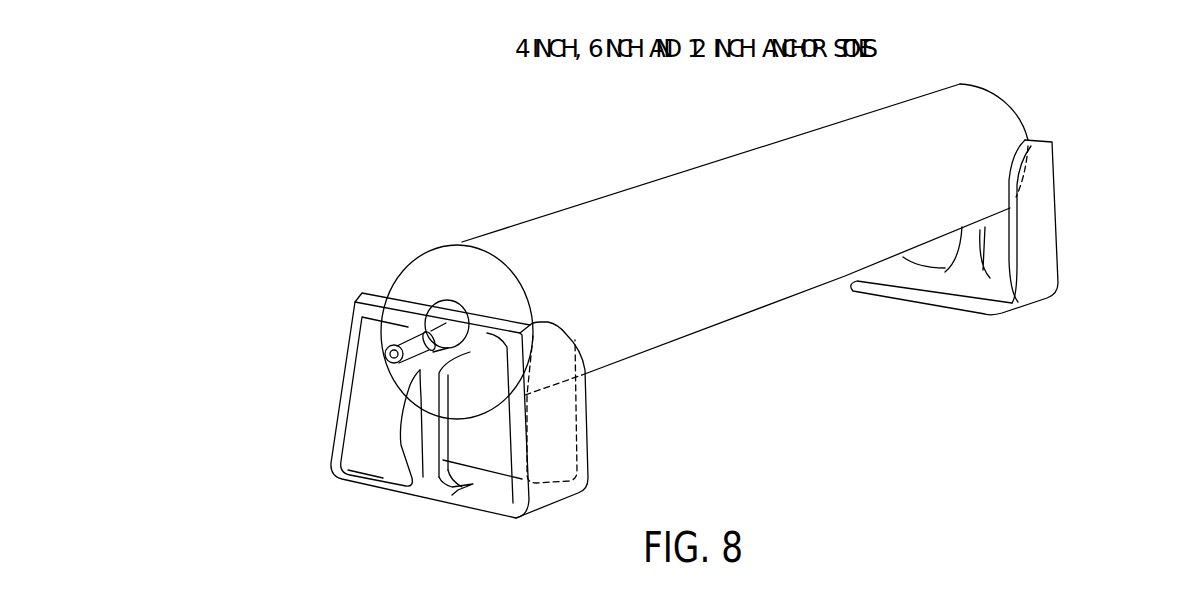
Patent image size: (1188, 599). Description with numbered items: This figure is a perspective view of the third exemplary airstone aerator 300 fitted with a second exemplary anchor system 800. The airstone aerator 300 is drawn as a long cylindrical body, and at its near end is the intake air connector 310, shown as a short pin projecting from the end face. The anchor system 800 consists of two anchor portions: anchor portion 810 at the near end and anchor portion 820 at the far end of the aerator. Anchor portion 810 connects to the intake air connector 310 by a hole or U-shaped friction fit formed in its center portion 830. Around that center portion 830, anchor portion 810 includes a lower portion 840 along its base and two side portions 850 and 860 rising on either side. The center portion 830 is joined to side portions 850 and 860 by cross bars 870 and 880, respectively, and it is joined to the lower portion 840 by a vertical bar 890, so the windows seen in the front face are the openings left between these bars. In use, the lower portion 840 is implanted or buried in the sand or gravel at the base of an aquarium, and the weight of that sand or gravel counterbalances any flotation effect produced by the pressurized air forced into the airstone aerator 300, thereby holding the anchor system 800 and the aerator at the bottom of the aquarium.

The airstone aerator 300 is at (604, 179).
The intake air connector 310 is at (424, 281).
The anchor system 800 is at (636, 462).
The anchor portion 810 is at (456, 385).
The anchor portion 820 is at (1080, 226).
The center portion 830 is at (449, 302).
The lower portion 840 is at (380, 468).
The side portion 850 is at (367, 368).
The side portion 860 is at (588, 450).
The cross bar 870 is at (367, 297).
The cross bar 880 is at (500, 327).
The vertical bar 890 is at (430, 430).